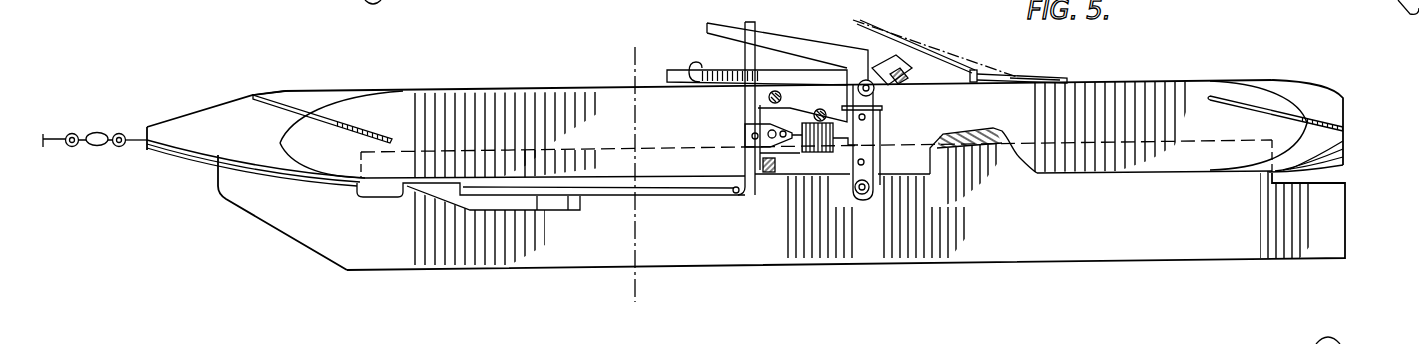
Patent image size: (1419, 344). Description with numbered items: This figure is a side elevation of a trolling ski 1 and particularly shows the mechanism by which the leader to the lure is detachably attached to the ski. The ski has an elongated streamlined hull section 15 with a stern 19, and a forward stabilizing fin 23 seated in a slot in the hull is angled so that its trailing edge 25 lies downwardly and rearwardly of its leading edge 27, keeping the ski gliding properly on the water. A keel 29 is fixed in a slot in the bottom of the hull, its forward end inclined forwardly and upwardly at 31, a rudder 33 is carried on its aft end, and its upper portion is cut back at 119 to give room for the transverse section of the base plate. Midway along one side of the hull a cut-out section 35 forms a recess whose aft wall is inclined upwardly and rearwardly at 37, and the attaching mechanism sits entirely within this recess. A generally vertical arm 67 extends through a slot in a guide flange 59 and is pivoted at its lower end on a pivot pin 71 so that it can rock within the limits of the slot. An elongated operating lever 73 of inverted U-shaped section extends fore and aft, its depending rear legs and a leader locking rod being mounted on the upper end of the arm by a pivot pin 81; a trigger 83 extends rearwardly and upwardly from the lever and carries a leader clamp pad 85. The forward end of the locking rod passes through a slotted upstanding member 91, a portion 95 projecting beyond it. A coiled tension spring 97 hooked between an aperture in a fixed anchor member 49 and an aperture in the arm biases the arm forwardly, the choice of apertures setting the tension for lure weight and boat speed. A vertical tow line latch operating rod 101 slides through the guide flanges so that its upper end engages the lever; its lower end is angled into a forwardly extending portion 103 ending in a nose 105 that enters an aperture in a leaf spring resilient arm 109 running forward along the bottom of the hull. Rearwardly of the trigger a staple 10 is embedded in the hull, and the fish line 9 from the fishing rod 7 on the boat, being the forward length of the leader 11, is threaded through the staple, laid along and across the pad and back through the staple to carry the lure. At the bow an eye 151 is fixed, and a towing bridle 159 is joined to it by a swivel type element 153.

The trolling ski 1 is at (1090, 66).
The fishing rod 7 is at (650, 66).
The fish line 9 is at (872, 21).
The staple 10 is at (978, 73).
The leader 11 is at (1010, 74).
The hull section 15 is at (1134, 100).
The stern 19 is at (198, 116).
The forward stabilizing fin 23 is at (299, 108).
The trailing edge 25 is at (398, 118).
The leading edge 27 is at (254, 93).
The keel 29 is at (1057, 247).
The inclined forward end of keel 31 is at (298, 238).
The rudder 33 is at (1333, 231).
The cut-out section 35 is at (832, 165).
The inclined aft wall portion 37 is at (895, 100).
The anchor member 49 is at (750, 131).
The guide flange 59 is at (883, 112).
The arm 67 is at (860, 152).
The pivot pin 71 is at (872, 190).
The operating lever 73 is at (790, 48).
The pivot pin 81 is at (880, 88).
The trigger 83 is at (896, 65).
The leader clamp pad 85 is at (905, 95).
The upstanding member 91 is at (697, 60).
The forward portion of locking rod 95 is at (677, 69).
The coiled tension spring 97 is at (825, 148).
The tow line latch operating rod 101 is at (758, 50).
The forwardly extending portion 103 is at (752, 197).
The nose 105 is at (736, 195).
The leaf spring resilient arm 109 is at (701, 191).
The cut back portion of keel 119 is at (512, 203).
The eye 151 is at (147, 138).
The swivel type element 153 is at (100, 148).
The towing bridle 159 is at (42, 140).